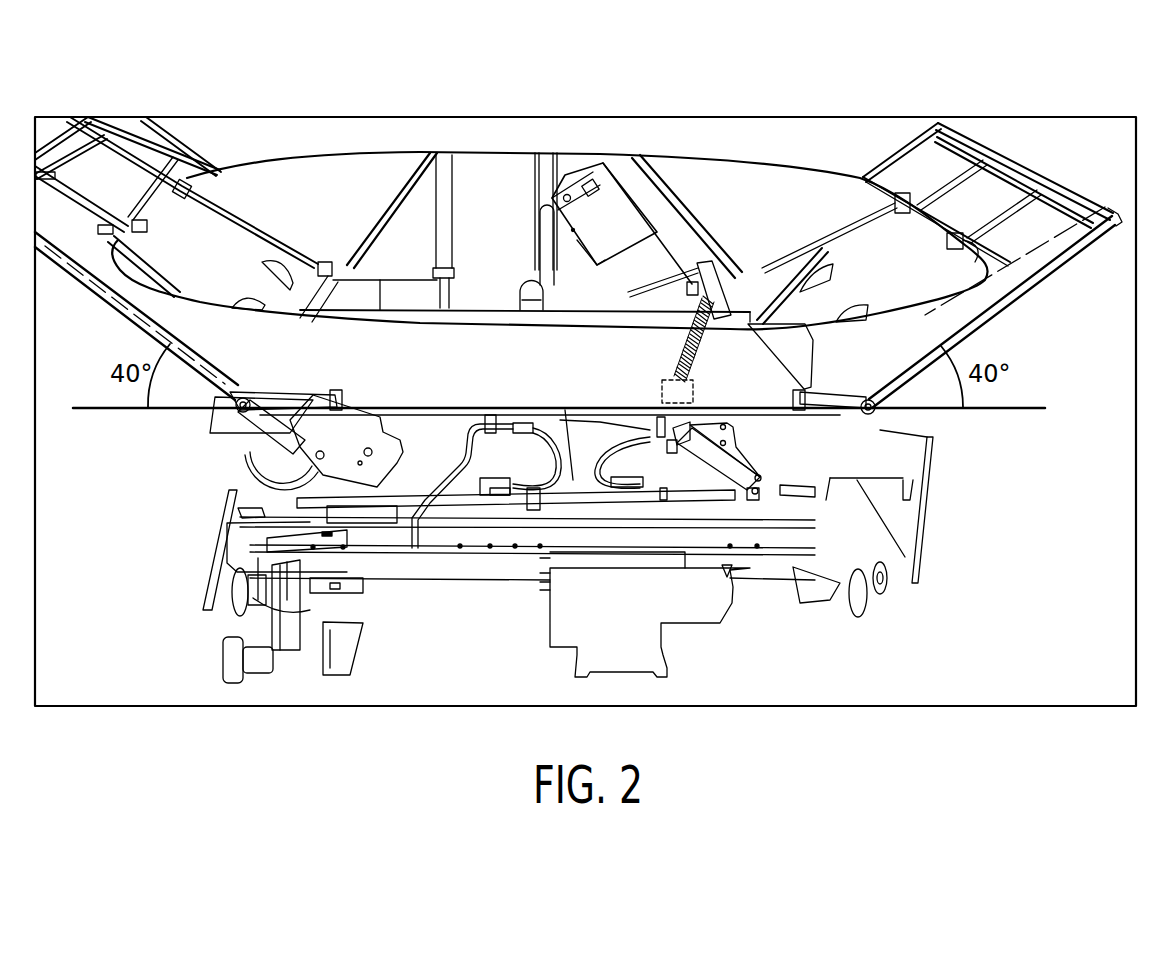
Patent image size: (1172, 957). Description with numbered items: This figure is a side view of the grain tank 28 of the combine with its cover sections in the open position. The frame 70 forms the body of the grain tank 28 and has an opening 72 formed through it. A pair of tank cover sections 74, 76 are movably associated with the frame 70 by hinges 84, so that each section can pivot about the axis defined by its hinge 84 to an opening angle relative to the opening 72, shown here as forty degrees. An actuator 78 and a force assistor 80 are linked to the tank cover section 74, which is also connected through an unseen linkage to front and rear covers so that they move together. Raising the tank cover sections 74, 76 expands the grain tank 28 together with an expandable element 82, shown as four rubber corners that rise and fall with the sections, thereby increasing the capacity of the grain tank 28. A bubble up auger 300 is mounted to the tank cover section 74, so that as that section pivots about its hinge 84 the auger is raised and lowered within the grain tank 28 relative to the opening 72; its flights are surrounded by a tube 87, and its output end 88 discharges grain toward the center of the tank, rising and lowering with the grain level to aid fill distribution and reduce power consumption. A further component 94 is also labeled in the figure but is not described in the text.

The grain tank 28 is at (934, 99).
The frame 70 is at (905, 430).
The opening 72 is at (493, 300).
The tank cover section 74 is at (1072, 242).
The tank cover section 76 is at (78, 283).
The actuator 78 is at (517, 423).
The force assistor 80 is at (727, 470).
The expandable element 82 is at (762, 200).
The hinge 84 is at (355, 263).
The tube 87 is at (655, 262).
The output end 88 is at (587, 165).
The pivot link 94 is at (852, 393).
The bubble up auger 300 is at (583, 245).